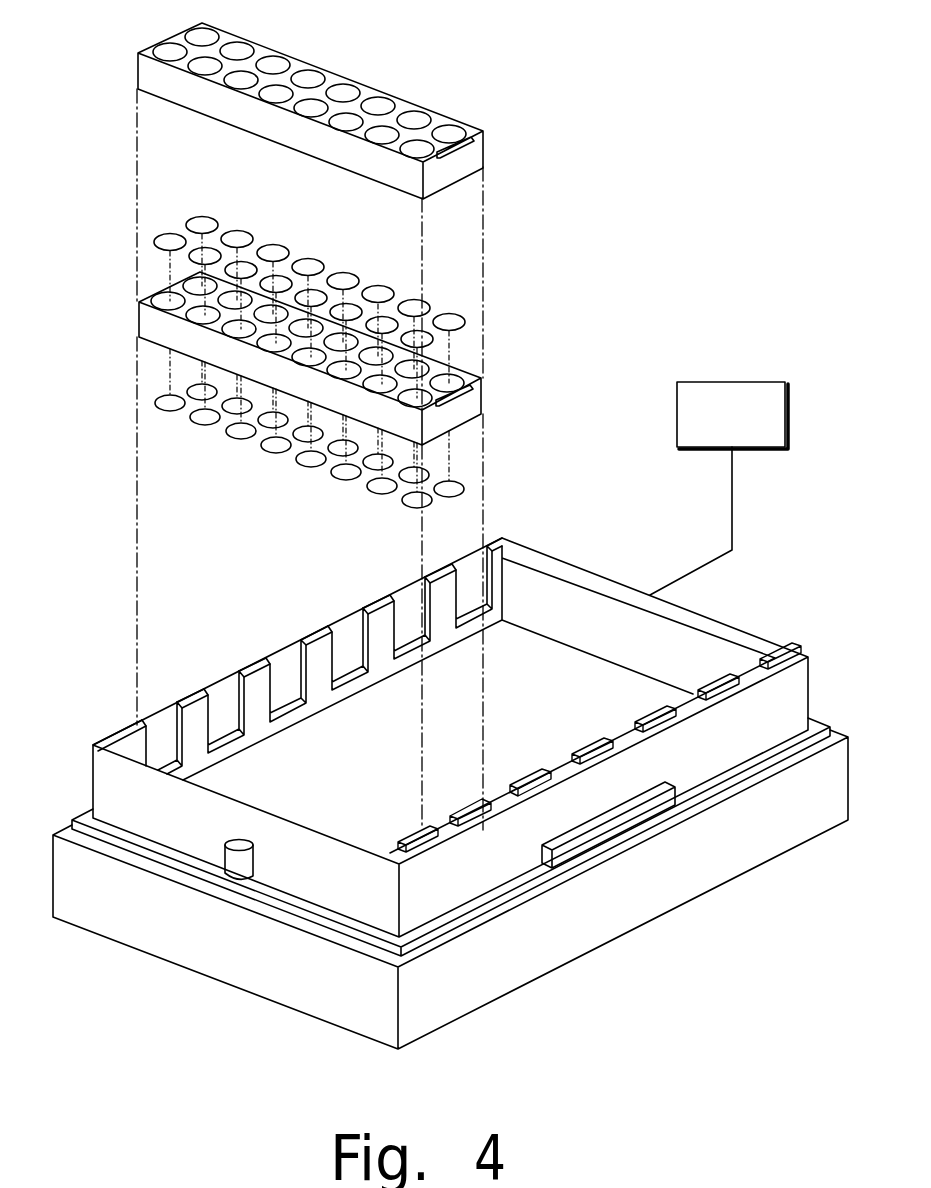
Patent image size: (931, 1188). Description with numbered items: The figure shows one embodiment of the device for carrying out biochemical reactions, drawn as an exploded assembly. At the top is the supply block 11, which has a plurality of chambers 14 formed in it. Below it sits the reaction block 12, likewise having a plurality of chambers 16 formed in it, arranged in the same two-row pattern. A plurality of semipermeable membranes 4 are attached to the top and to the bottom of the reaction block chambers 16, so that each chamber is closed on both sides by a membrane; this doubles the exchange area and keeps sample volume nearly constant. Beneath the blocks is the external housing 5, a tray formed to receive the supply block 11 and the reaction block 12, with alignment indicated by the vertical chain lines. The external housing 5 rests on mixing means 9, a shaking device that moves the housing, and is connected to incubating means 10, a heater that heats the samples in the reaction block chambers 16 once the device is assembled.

The semipermeable membrane 4 is at (172, 233).
The external housing 5 is at (565, 562).
The mixing means 9 is at (628, 920).
The incubating means 10 is at (733, 382).
The supply block 11 is at (338, 105).
The reaction block 12 is at (337, 347).
The chambers 14 is at (278, 62).
The chambers 16 is at (166, 298).